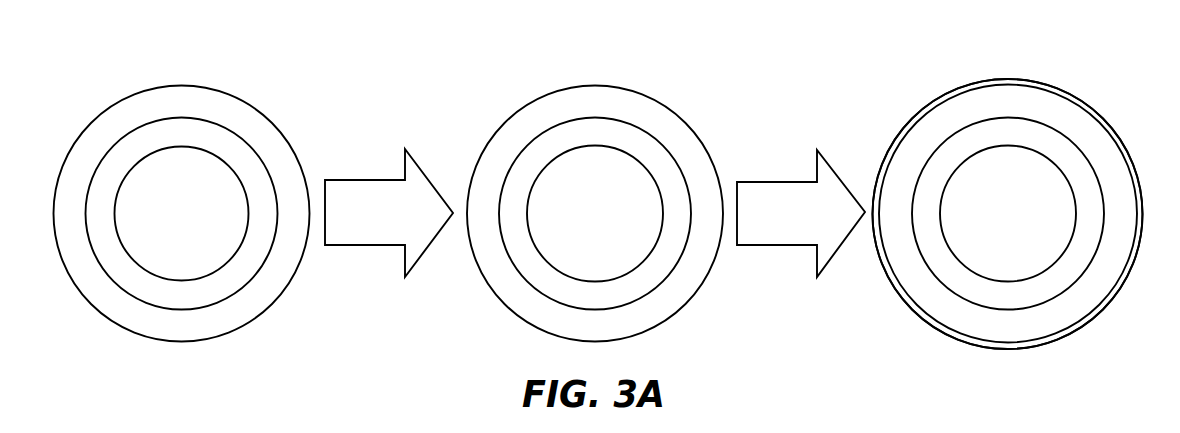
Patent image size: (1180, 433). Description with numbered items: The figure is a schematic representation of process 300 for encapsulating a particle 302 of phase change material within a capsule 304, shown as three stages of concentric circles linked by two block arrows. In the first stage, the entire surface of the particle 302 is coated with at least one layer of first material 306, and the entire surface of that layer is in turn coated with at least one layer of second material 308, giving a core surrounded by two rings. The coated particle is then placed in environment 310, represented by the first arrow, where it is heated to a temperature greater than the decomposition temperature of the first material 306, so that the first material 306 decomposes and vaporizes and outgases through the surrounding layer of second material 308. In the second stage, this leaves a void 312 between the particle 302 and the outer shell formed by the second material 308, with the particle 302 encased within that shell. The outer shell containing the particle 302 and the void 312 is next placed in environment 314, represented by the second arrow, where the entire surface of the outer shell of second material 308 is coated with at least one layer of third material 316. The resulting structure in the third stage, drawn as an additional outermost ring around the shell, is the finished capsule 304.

The process 300 is at (418, 317).
The particle 302 is at (205, 218).
The capsule 304 is at (870, 275).
The first material 306 is at (180, 132).
The second material 308 is at (264, 135).
The environment 310 is at (407, 222).
The void 312 is at (562, 142).
The environment 314 is at (822, 222).
The third material 316 is at (925, 112).